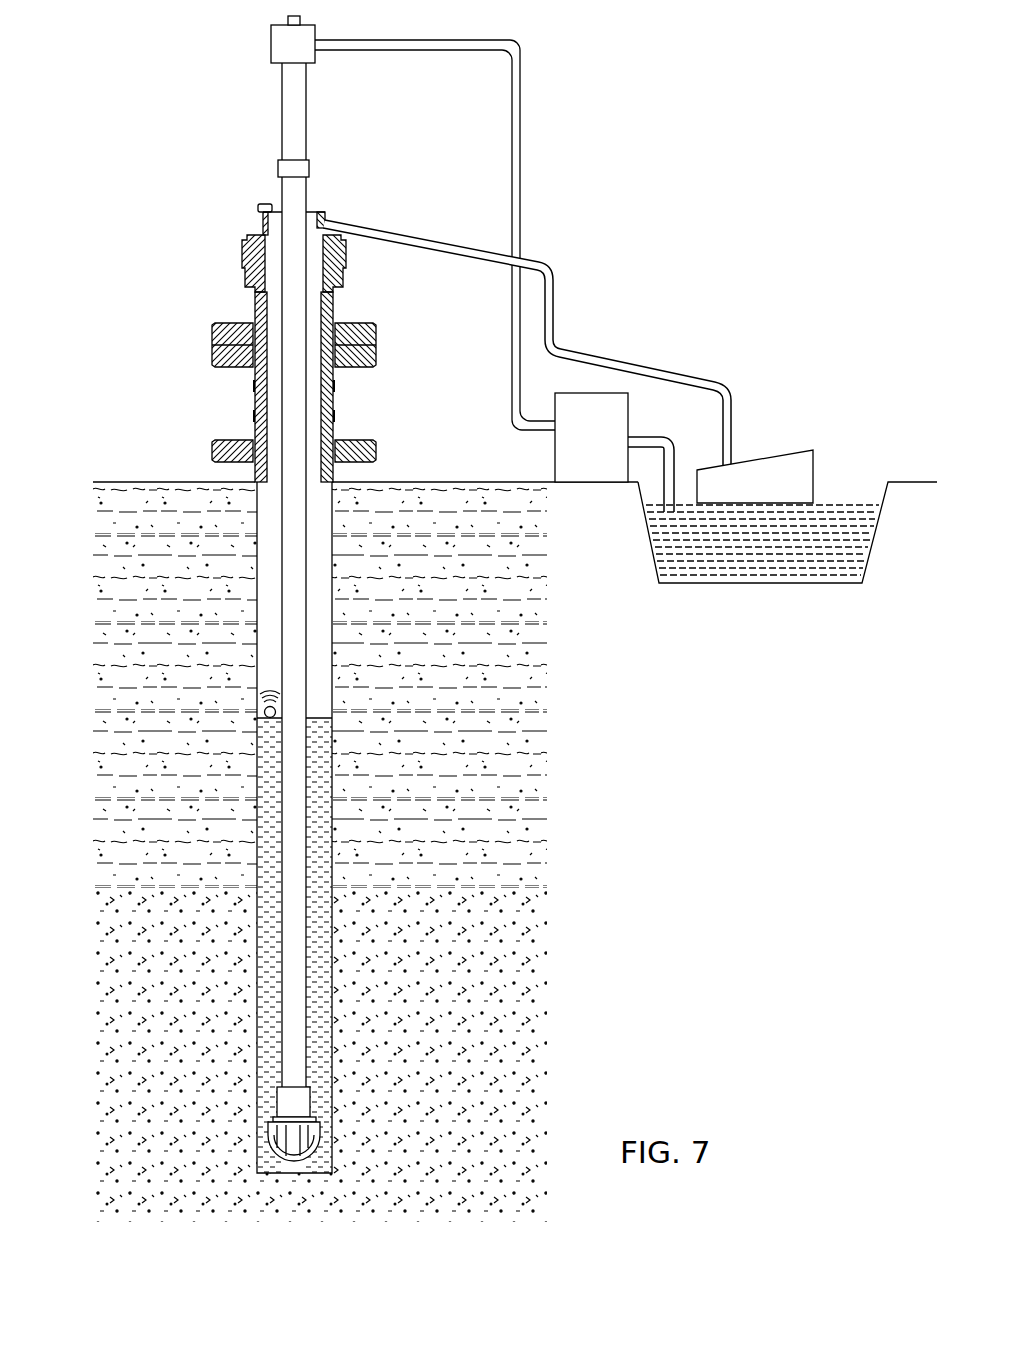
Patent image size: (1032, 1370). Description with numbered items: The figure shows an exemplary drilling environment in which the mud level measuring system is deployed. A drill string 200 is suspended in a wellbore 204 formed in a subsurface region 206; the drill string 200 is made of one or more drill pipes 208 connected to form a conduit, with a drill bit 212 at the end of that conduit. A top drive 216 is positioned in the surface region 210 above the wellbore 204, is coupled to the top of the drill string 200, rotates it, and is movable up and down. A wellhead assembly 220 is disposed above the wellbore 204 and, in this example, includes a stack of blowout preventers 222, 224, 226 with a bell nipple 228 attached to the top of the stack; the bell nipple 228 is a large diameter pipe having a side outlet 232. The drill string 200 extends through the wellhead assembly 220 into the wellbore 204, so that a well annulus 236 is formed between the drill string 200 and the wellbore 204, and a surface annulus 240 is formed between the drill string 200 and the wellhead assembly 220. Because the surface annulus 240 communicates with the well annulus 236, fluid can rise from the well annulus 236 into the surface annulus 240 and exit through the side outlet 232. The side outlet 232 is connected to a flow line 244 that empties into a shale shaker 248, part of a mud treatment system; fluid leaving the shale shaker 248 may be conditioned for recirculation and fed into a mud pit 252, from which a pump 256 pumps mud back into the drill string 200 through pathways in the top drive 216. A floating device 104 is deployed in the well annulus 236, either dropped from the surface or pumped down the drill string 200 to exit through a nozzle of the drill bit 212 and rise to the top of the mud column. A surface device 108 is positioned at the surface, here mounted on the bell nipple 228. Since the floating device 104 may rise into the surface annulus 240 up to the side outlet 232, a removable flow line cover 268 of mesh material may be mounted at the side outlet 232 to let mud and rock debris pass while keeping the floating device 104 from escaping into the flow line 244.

The floating device 104 is at (265, 712).
The surface device 108 is at (260, 203).
The drill string 200 is at (282, 613).
The wellbore 204 is at (257, 553).
The subsurface region 206 is at (513, 922).
The drill pipe 208 is at (290, 831).
The surface region 210 is at (137, 322).
The drill bit 212 is at (278, 1137).
The top drive 216 is at (270, 43).
The wellhead assembly 220 is at (240, 257).
The blowout preventer 222 is at (347, 257).
The blowout preventer 224 is at (212, 345).
The blowout preventer 226 is at (212, 450).
The bell nipple 228 is at (263, 227).
The side outlet 232 is at (325, 223).
The well annulus 236 is at (270, 658).
The surface annulus 240 is at (273, 407).
The flow line 244 is at (447, 249).
The shale shaker 248 is at (788, 465).
The mud pit 252 is at (888, 482).
The pump 256 is at (598, 468).
The flow line cover 268 is at (308, 212).